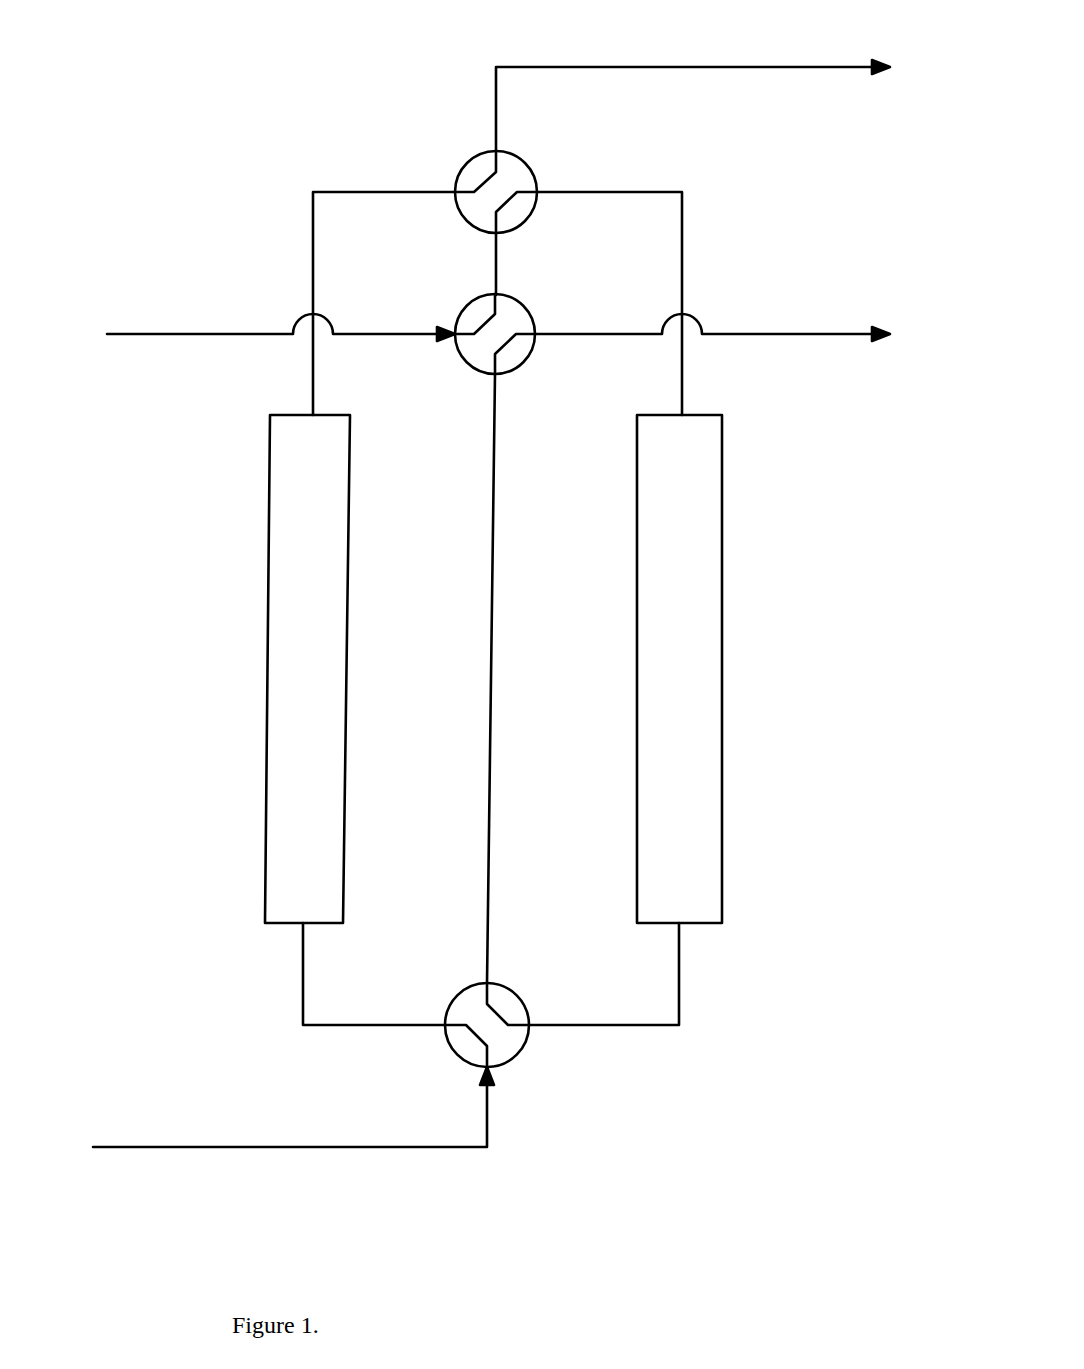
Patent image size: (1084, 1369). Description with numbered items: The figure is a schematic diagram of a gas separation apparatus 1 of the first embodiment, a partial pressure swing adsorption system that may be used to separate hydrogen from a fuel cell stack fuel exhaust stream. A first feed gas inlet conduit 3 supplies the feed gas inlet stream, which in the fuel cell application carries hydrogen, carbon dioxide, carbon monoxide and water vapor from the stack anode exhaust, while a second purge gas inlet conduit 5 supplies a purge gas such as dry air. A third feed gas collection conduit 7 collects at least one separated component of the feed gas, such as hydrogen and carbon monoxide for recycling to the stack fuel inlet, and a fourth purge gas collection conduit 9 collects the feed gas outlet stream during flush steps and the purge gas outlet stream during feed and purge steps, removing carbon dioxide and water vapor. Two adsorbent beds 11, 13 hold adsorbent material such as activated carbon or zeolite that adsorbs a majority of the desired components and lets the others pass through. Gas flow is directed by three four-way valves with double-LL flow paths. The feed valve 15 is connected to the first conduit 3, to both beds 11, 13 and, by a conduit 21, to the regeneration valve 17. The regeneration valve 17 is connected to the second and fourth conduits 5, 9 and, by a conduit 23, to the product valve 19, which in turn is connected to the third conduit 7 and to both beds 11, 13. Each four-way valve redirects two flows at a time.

The gas separation apparatus 1 is at (178, 49).
The first feed gas inlet conduit 3 is at (343, 1143).
The second purge gas inlet conduit 5 is at (213, 338).
The third feed gas collection conduit 7 is at (826, 68).
The fourth purge gas collection conduit 9 is at (815, 338).
The adsorbent bed 11 is at (266, 773).
The adsorbent bed 13 is at (725, 668).
The feed valve 15 is at (523, 1046).
The regeneration valve 17 is at (519, 366).
The product valve 19 is at (468, 158).
The conduit 21 is at (490, 860).
The conduit 23 is at (492, 260).